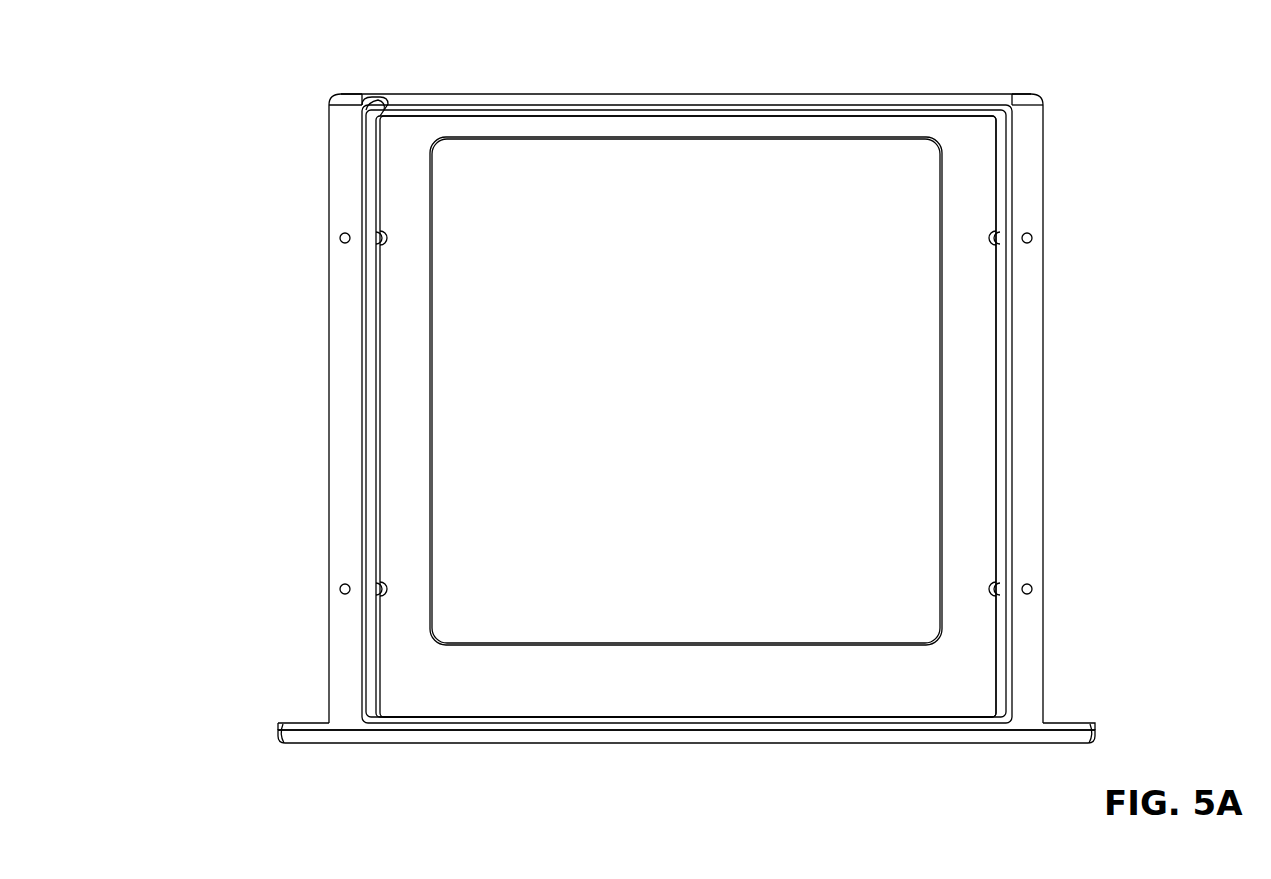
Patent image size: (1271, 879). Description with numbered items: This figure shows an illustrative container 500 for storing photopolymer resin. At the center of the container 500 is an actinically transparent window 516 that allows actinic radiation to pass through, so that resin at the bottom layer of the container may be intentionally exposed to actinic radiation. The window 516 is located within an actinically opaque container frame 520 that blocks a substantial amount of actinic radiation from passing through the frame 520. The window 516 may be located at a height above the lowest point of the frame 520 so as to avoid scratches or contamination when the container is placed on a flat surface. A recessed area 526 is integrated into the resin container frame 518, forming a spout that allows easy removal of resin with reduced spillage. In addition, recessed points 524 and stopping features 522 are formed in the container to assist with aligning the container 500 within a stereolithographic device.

The container 500 is at (212, 54).
The actinically transparent window 516 is at (528, 277).
The resin container frame 518 is at (347, 186).
The actinically opaque container frame 520 is at (572, 675).
The stopping features 522 is at (1068, 730).
The recessed points 524 is at (1032, 586).
The recessed area 526 is at (362, 106).